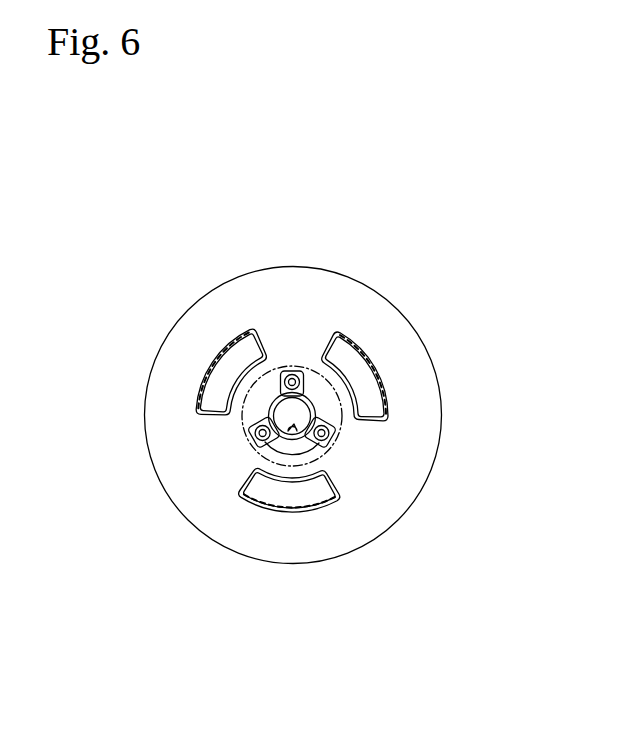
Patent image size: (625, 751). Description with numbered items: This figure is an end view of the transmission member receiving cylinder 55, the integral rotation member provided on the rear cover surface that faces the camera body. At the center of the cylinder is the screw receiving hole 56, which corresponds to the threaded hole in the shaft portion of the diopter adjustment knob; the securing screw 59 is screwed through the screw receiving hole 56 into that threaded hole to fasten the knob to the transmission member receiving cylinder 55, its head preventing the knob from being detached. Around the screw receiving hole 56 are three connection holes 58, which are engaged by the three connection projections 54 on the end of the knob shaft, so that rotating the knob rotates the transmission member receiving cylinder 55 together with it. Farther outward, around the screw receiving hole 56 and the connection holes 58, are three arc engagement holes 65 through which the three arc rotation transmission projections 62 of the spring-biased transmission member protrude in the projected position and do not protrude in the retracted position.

The connection projections 54 is at (292, 376).
The transmission member receiving cylinder 55 is at (423, 375).
The screw receiving hole 56 is at (320, 443).
The connection holes 58 is at (291, 373).
The securing screw 59 is at (333, 423).
The arc rotation transmission projections 62 is at (360, 373).
The arc engagement holes 65 is at (352, 350).